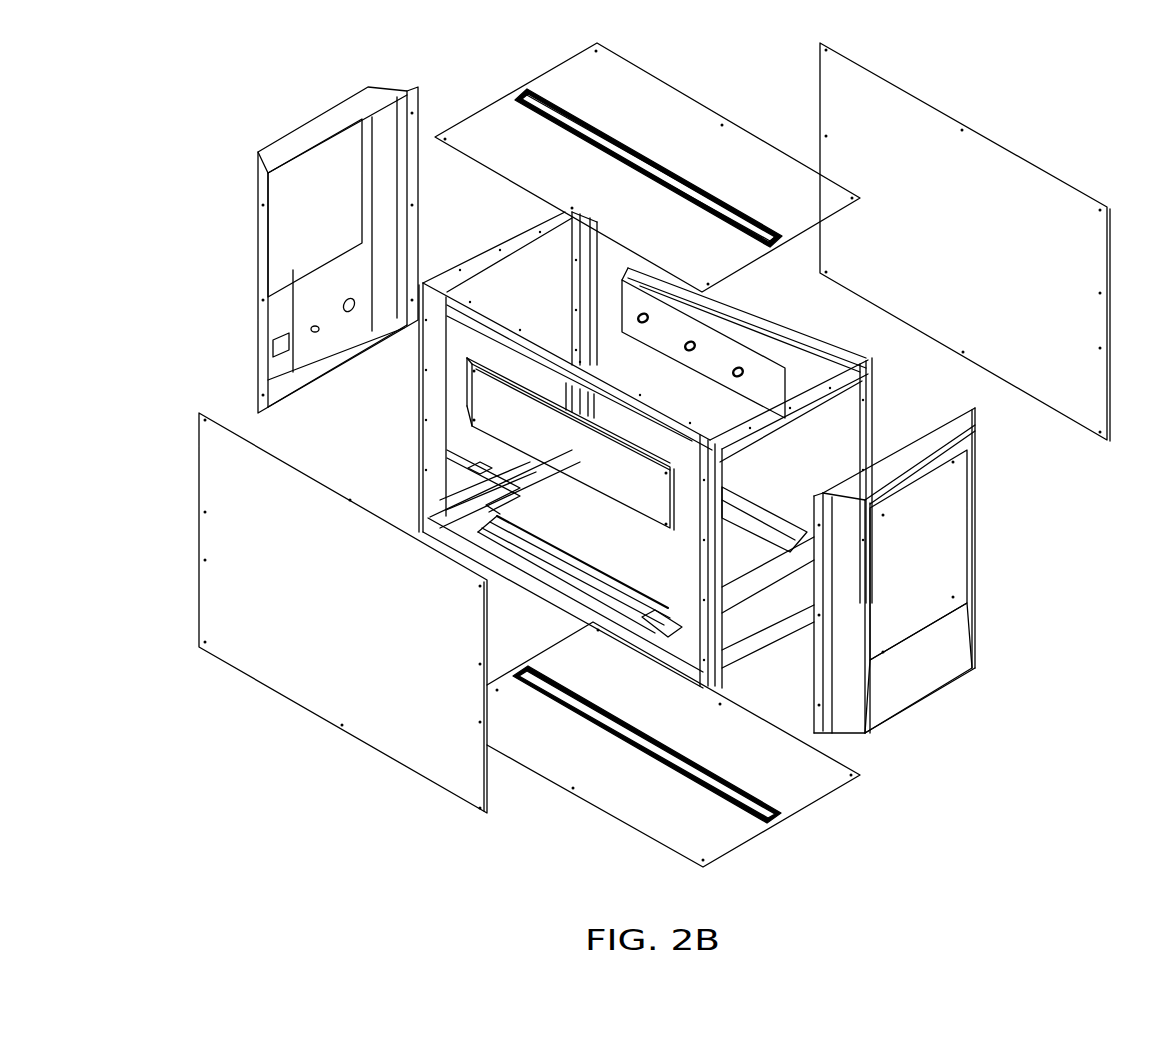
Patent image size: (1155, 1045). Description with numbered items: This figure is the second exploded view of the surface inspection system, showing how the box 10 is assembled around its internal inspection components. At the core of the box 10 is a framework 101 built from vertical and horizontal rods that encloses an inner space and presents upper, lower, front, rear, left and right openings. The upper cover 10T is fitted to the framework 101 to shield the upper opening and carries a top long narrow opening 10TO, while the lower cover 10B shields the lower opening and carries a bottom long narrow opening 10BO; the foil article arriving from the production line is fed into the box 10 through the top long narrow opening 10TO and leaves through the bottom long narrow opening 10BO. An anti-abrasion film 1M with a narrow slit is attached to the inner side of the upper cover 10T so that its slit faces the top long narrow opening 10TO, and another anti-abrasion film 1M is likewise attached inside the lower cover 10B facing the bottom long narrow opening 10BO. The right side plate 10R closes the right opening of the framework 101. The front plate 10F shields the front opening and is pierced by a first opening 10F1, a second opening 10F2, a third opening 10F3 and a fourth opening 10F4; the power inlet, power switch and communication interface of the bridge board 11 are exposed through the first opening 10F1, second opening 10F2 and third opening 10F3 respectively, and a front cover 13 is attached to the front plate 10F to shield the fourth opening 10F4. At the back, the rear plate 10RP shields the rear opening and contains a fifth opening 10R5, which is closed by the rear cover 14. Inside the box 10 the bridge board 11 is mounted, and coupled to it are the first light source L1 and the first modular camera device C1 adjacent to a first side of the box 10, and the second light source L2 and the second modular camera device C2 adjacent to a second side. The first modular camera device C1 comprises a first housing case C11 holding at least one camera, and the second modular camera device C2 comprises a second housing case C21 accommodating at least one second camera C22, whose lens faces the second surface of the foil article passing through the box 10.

The box 10 is at (213, 451).
The front plate 10F is at (252, 161).
The front cover 13 is at (275, 222).
The first opening 10F1 is at (278, 338).
The second opening 10F2 is at (350, 298).
The third opening 10F3 is at (322, 332).
The fourth opening 10F4 is at (294, 300).
The upper cover 10T is at (682, 115).
The top long narrow opening 10TO is at (539, 95).
The anti-abrasion film 1M is at (520, 97).
The right side plate 10R is at (925, 125).
The framework 101 is at (877, 367).
The bridge board 11 is at (433, 480).
The first modular camera device C1 is at (634, 516).
The first housing case C11 is at (503, 367).
The second modular camera device C2 is at (734, 312).
The second housing case C21 is at (772, 360).
The second camera C22 is at (646, 325).
The first light source L1 is at (640, 617).
The second light source L2 is at (780, 528).
The rear plate 10RP is at (988, 655).
The rear cover 14 is at (957, 495).
The fifth opening 10R5 is at (897, 650).
The lower cover 10B is at (843, 786).
The bottom long narrow opening 10BO is at (735, 797).